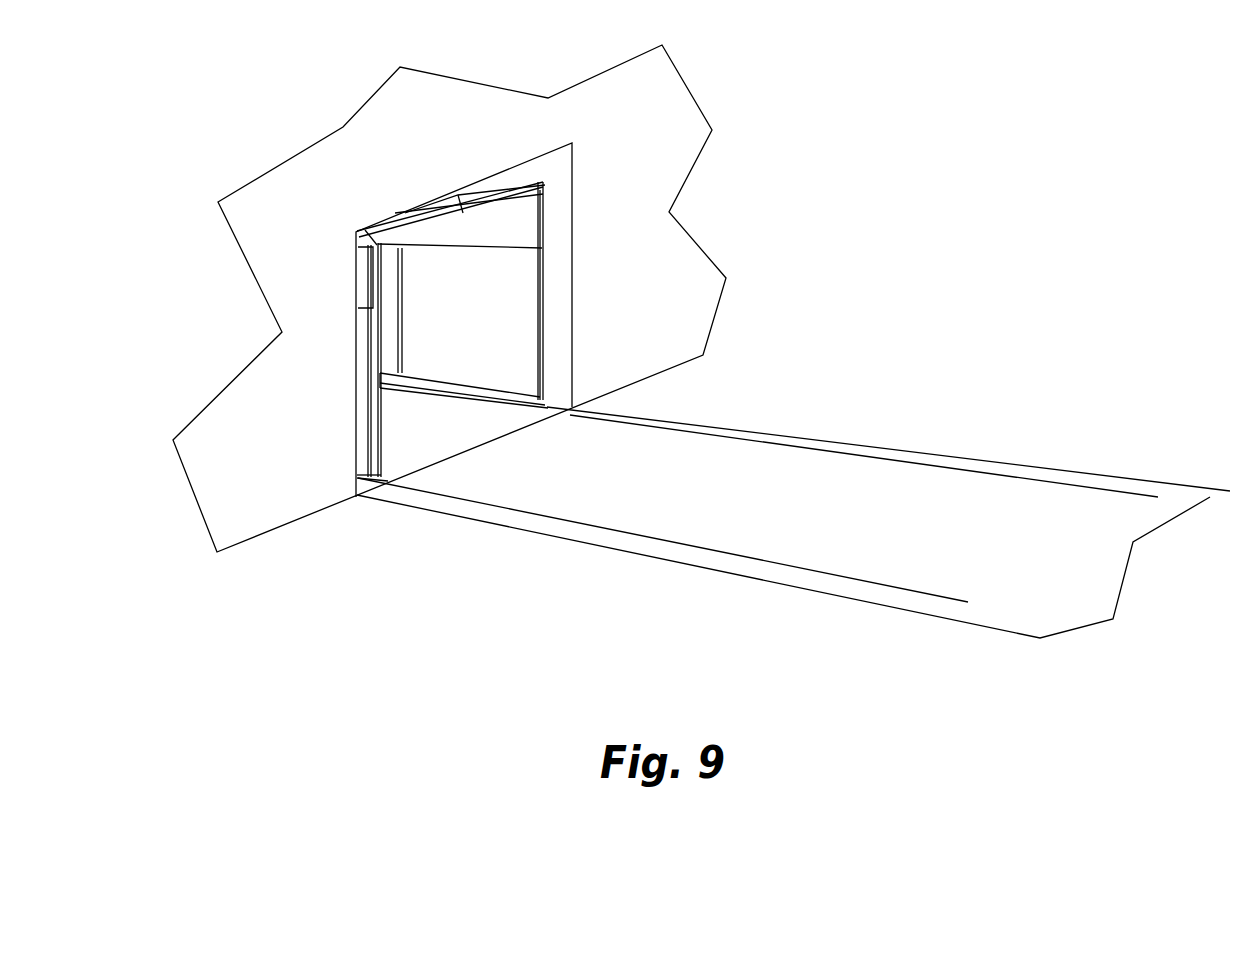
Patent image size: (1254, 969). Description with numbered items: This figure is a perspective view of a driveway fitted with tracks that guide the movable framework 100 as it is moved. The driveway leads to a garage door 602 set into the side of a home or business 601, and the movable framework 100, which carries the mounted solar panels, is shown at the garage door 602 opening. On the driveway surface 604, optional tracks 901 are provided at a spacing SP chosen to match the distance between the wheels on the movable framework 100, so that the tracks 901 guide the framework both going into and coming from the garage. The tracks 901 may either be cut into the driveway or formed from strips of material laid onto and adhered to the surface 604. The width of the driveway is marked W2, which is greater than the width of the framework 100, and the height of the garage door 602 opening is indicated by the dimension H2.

The home or business 601 is at (648, 118).
The garage door 602 is at (705, 173).
The movable framework 100 is at (535, 258).
The tracks 901 is at (688, 434).
The floor 604 is at (715, 515).
The spacing SP is at (962, 471).
The width of the driveway W2 is at (572, 103).
The opening height dimension H2 is at (345, 235).